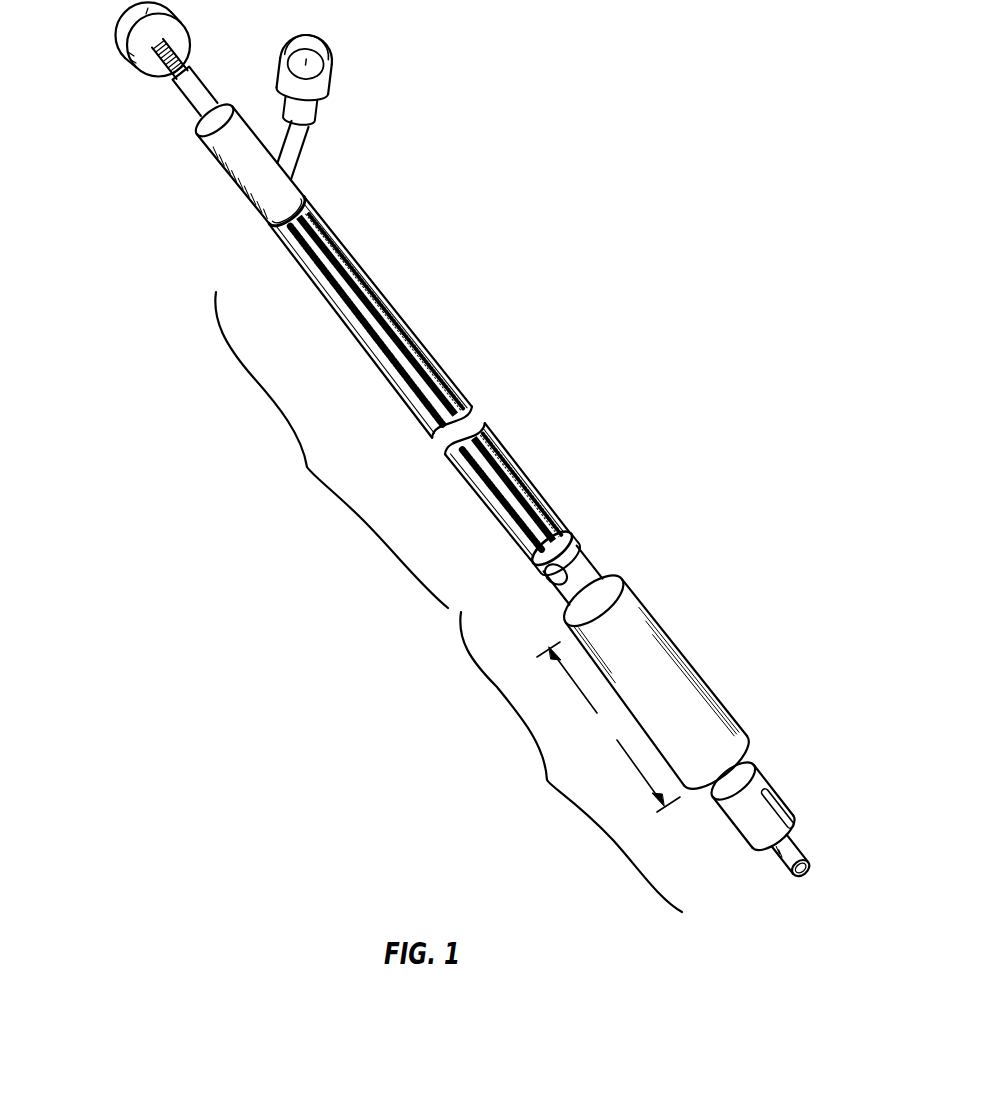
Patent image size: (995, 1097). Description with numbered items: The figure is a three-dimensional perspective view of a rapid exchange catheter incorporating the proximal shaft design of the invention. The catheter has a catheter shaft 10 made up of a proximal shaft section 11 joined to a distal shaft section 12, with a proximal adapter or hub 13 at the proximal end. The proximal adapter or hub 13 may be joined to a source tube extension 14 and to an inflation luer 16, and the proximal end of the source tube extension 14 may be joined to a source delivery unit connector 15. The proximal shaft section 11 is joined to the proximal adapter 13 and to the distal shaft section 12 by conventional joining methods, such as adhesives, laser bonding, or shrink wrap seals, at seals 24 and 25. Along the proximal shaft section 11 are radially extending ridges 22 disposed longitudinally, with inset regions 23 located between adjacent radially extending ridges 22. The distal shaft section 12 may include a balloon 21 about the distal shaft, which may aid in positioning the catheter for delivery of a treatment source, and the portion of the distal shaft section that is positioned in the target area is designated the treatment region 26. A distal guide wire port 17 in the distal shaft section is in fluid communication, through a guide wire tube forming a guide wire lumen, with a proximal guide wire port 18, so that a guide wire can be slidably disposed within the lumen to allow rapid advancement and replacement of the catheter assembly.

The catheter shaft 10 is at (367, 268).
The proximal shaft section 11 is at (331, 450).
The distal shaft section 12 is at (571, 762).
The proximal adapter or hub 13 is at (233, 190).
The source tube extension 14 is at (190, 90).
The source delivery unit (SDU) connector 15 is at (118, 36).
The inflation luer 16 is at (335, 67).
The distal guide wire port 17 is at (813, 872).
The proximal guide wire port 18 is at (543, 570).
The balloon 21 is at (700, 680).
The radially extending ridges 22 is at (372, 318).
The inset regions 23 is at (410, 383).
The seal 24 is at (305, 197).
The seal 25 is at (567, 540).
The treatment region 26 is at (608, 727).